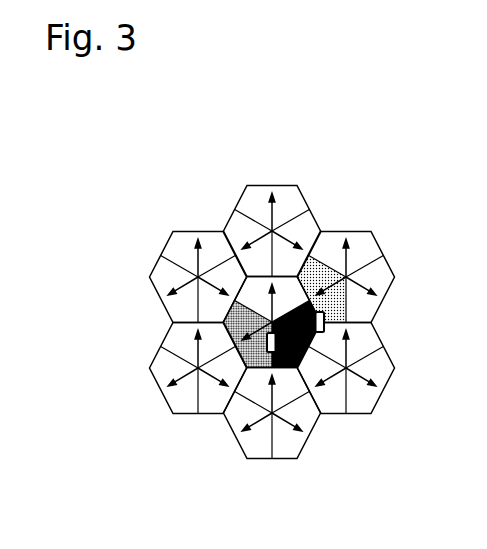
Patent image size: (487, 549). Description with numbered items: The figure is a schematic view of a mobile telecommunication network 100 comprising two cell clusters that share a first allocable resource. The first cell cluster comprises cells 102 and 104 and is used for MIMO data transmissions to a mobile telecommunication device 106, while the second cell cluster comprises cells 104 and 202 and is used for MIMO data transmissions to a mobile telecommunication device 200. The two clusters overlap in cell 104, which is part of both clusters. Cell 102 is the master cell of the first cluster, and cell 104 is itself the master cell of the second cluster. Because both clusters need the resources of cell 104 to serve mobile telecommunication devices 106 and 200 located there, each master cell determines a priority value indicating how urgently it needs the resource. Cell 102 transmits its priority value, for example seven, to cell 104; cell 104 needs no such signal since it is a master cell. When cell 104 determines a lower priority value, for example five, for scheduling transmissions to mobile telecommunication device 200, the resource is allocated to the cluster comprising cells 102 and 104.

The mobile telecommunication network 100 is at (141, 179).
The cell 102 is at (318, 274).
The cell 104 is at (318, 310).
The mobile telecommunication device 106 is at (333, 325).
The mobile telecommunication device 200 is at (265, 364).
The cell 202 is at (235, 315).